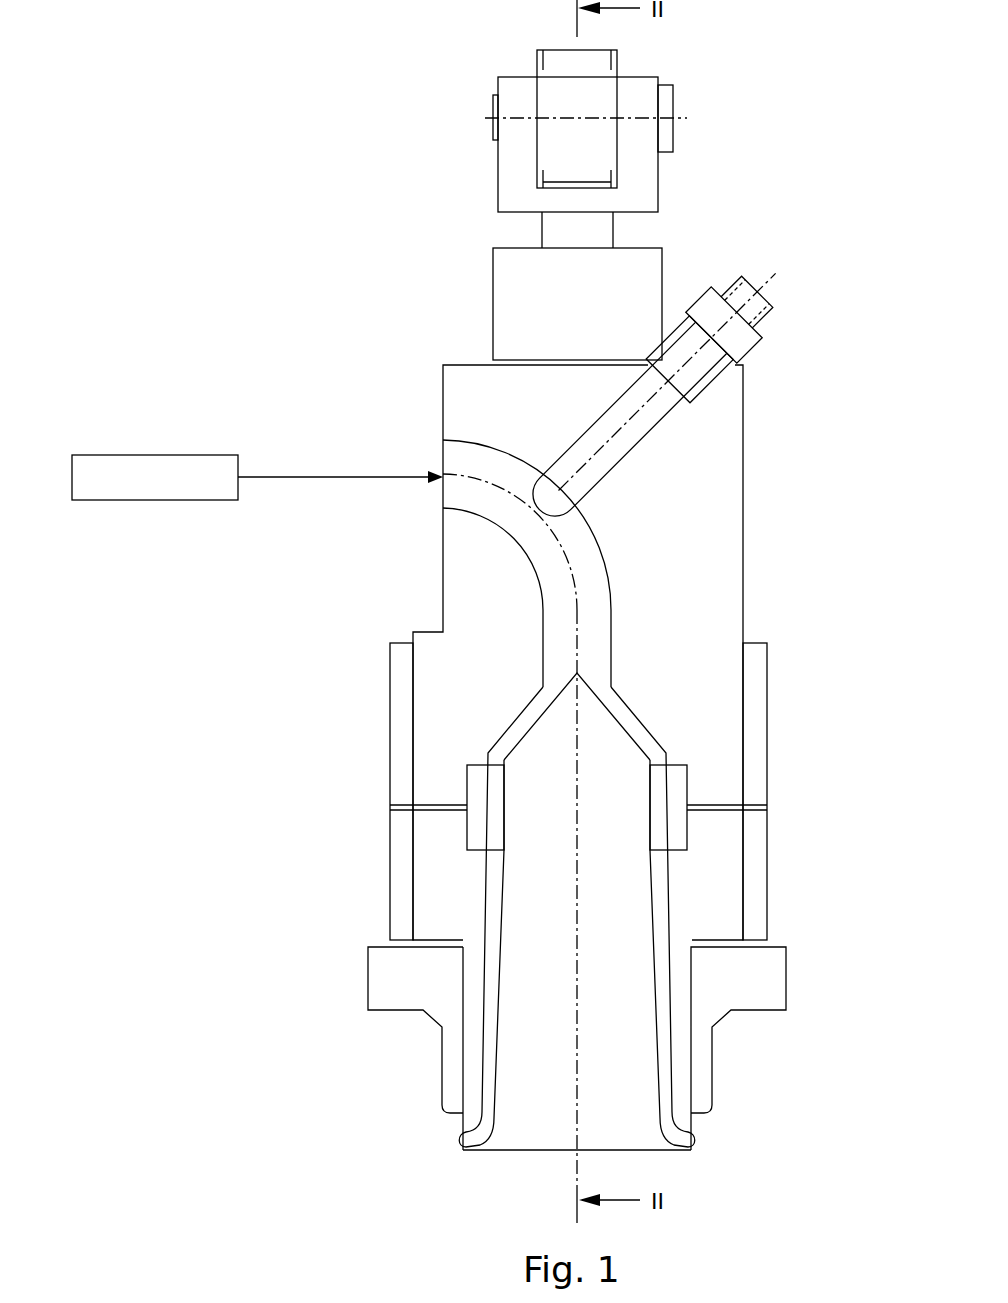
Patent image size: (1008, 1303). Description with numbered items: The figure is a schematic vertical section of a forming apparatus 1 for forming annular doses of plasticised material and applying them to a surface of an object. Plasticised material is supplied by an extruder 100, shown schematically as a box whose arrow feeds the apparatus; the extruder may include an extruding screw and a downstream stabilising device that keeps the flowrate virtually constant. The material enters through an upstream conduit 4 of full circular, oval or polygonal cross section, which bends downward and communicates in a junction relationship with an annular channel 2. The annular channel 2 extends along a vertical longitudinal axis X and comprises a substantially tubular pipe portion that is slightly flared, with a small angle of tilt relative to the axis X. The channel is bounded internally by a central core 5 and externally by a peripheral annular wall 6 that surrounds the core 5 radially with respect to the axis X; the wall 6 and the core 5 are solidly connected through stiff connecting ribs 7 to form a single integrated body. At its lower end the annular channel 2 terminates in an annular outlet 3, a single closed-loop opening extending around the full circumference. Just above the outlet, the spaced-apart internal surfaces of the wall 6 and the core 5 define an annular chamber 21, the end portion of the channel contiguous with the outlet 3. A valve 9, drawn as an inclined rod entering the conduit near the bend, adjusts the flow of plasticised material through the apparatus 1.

The forming apparatus 1 is at (260, 95).
The annular channel 2 is at (499, 908).
The annular outlet 3 is at (693, 1133).
The conduit 4 is at (479, 453).
The core 5 is at (537, 1128).
The annular wall 6 is at (682, 1060).
The connecting ribs 7 is at (497, 797).
The valve 9 is at (636, 452).
The annular chamber 21 is at (470, 1093).
The extruder 100 is at (122, 455).
The longitudinal axis X is at (580, 912).